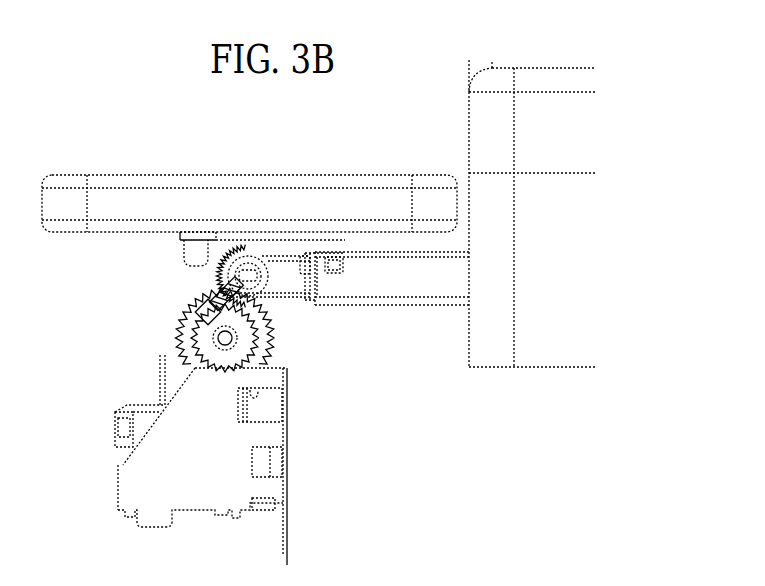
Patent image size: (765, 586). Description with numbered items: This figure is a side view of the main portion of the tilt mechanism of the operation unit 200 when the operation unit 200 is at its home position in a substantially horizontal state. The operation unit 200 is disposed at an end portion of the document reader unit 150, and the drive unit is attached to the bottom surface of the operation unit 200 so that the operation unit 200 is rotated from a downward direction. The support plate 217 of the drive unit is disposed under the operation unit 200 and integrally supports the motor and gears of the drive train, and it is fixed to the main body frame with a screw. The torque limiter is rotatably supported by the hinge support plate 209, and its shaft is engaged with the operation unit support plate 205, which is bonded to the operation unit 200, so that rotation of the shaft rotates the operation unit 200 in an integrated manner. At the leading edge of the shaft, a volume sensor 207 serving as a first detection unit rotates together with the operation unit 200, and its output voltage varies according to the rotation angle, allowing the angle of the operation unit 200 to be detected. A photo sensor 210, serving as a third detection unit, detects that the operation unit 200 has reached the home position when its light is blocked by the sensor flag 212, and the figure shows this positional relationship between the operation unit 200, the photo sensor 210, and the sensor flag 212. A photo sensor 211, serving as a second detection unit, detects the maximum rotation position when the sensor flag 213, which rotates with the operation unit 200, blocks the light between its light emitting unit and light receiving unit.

The document reader unit 150 is at (580, 264).
The operation unit 200 is at (149, 176).
The operation unit support plate 205 is at (281, 250).
The volume sensor 207 is at (204, 300).
The hinge support plate 209 is at (299, 297).
The photo sensor 210 is at (333, 274).
The photo sensor 211 is at (190, 318).
The sensor flag 212 is at (335, 253).
The sensor flag 213 is at (184, 250).
The support plate 217 is at (150, 468).